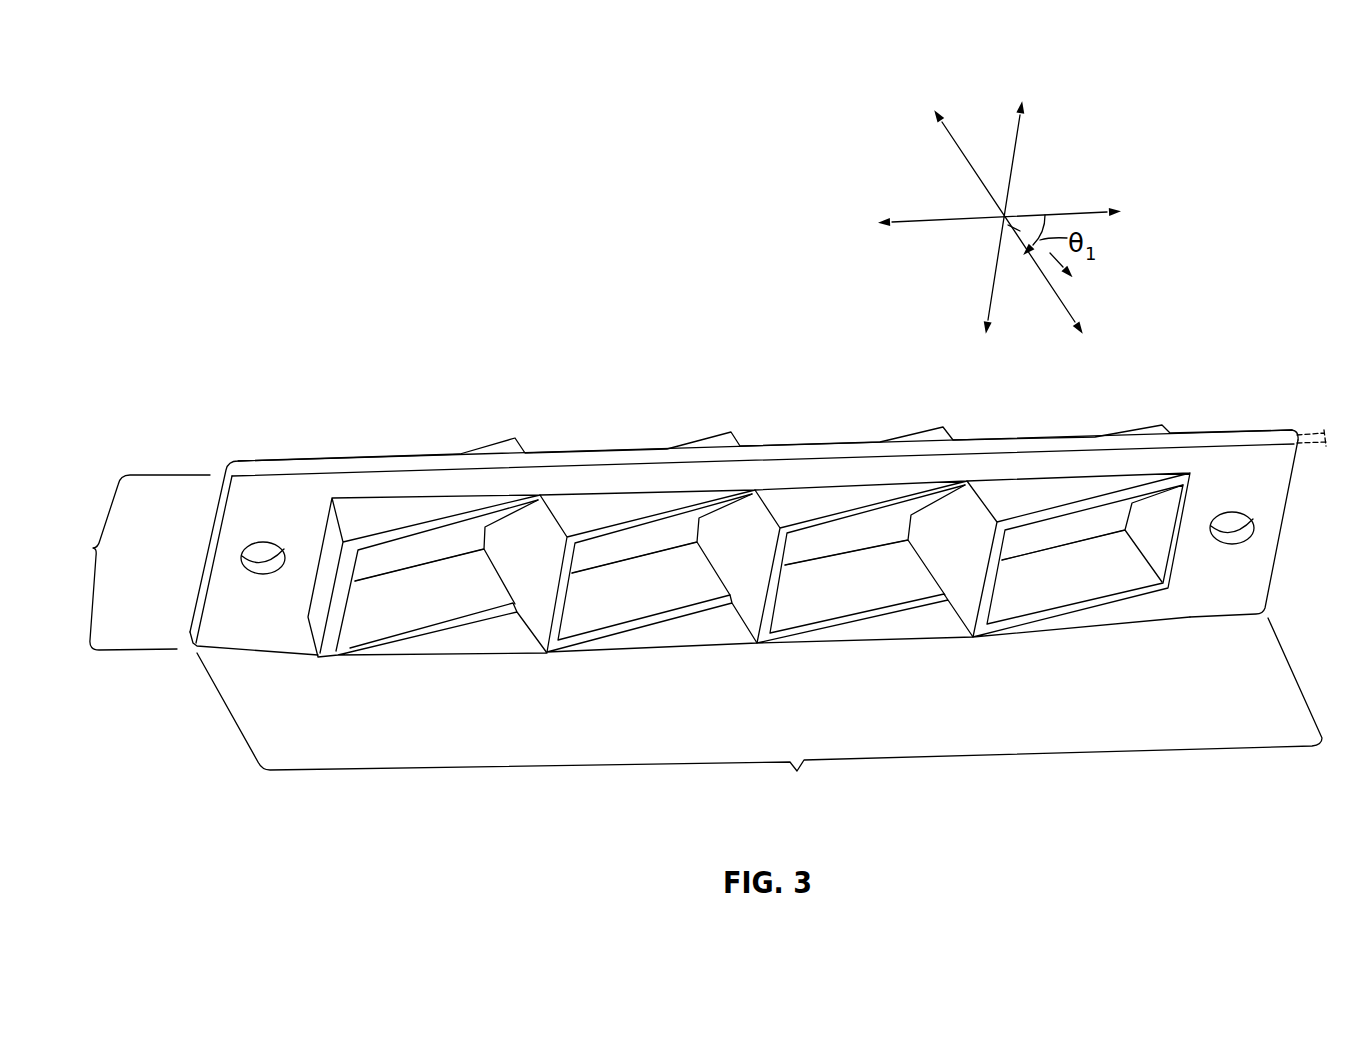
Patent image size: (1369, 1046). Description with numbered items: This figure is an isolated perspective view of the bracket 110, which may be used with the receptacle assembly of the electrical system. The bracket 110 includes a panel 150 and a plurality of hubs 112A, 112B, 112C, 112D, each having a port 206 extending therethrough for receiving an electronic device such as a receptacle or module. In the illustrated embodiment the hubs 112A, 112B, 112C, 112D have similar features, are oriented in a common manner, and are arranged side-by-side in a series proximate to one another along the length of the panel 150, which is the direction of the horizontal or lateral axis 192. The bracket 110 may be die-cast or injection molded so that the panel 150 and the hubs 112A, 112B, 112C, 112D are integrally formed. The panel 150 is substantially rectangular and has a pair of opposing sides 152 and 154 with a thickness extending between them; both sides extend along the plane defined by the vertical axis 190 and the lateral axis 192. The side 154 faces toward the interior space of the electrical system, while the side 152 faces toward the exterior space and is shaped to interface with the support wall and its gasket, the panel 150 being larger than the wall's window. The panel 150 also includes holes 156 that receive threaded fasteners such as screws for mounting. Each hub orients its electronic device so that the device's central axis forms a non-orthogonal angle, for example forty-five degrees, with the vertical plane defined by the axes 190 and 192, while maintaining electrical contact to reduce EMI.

The bracket 110 is at (503, 270).
The hub 112A is at (375, 512).
The hub 112B is at (583, 512).
The hub 112C is at (797, 503).
The hub 112D is at (1020, 493).
The panel 150 is at (1192, 440).
The side 152 is at (1263, 500).
The side 154 is at (1228, 428).
The holes 156 is at (262, 567).
The vertical axis 190 is at (1010, 177).
The lateral axis 192 is at (1060, 210).
The ports 206 is at (413, 587).